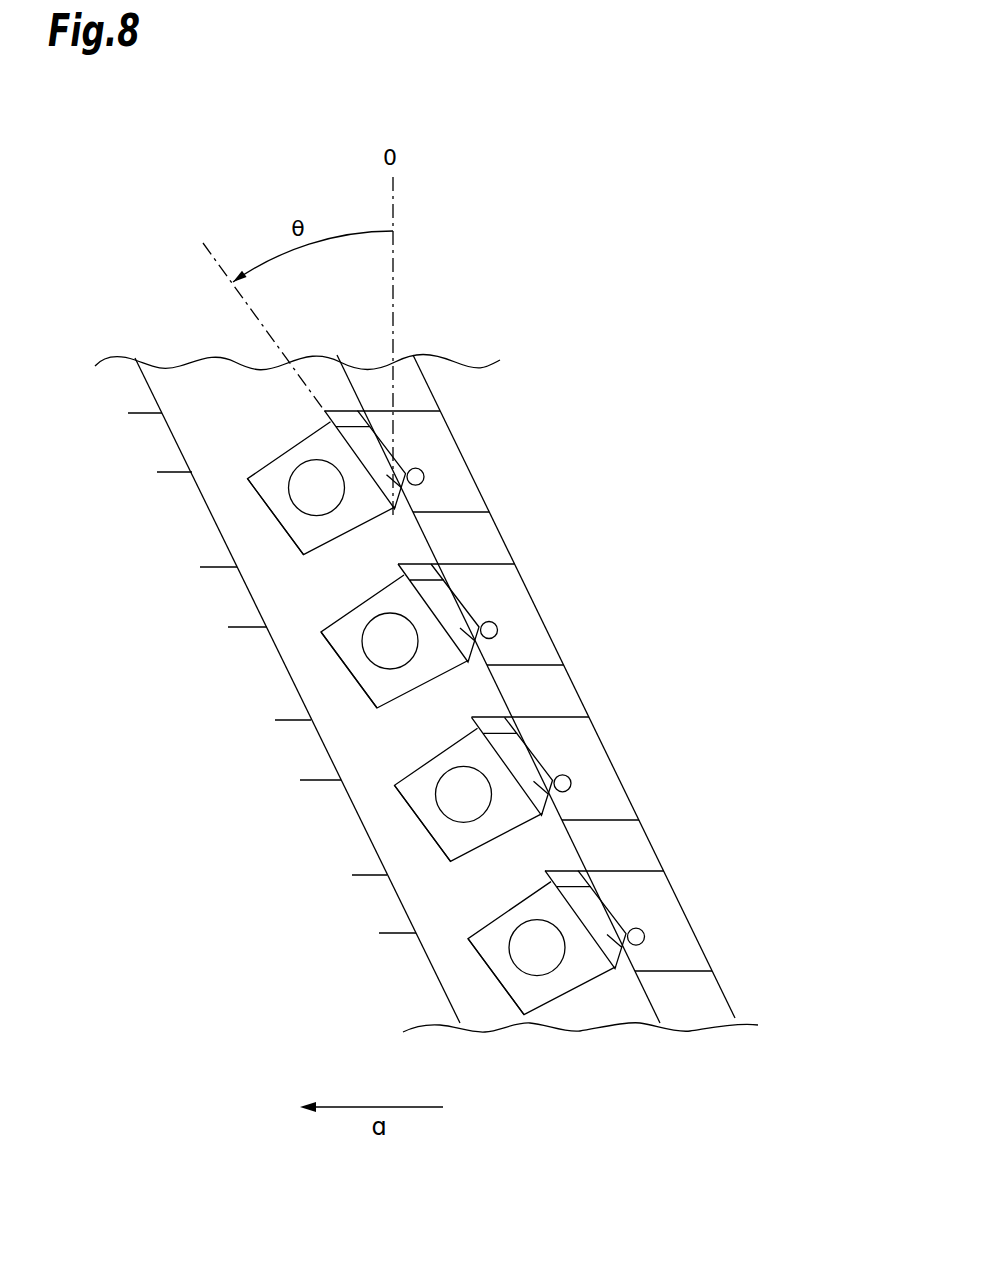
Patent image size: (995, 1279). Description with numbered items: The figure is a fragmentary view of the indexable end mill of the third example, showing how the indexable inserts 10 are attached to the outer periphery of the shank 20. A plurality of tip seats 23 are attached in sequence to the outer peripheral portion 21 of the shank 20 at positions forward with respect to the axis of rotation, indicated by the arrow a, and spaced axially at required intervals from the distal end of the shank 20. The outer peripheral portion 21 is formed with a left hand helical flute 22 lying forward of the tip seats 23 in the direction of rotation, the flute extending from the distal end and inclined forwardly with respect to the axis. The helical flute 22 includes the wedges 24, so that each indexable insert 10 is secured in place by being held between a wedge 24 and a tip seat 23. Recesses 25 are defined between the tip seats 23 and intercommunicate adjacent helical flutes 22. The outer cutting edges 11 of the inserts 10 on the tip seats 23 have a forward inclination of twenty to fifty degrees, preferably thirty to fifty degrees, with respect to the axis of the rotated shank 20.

The indexable insert 10 is at (383, 468).
The outer cutting edge 11 is at (340, 446).
The shank 20 is at (200, 350).
The outer peripheral portion 21 is at (562, 1032).
The left hand helical flute 22 is at (200, 448).
The tip seat 23 is at (383, 440).
The wedge 24 is at (300, 537).
The recess 25 is at (492, 534).